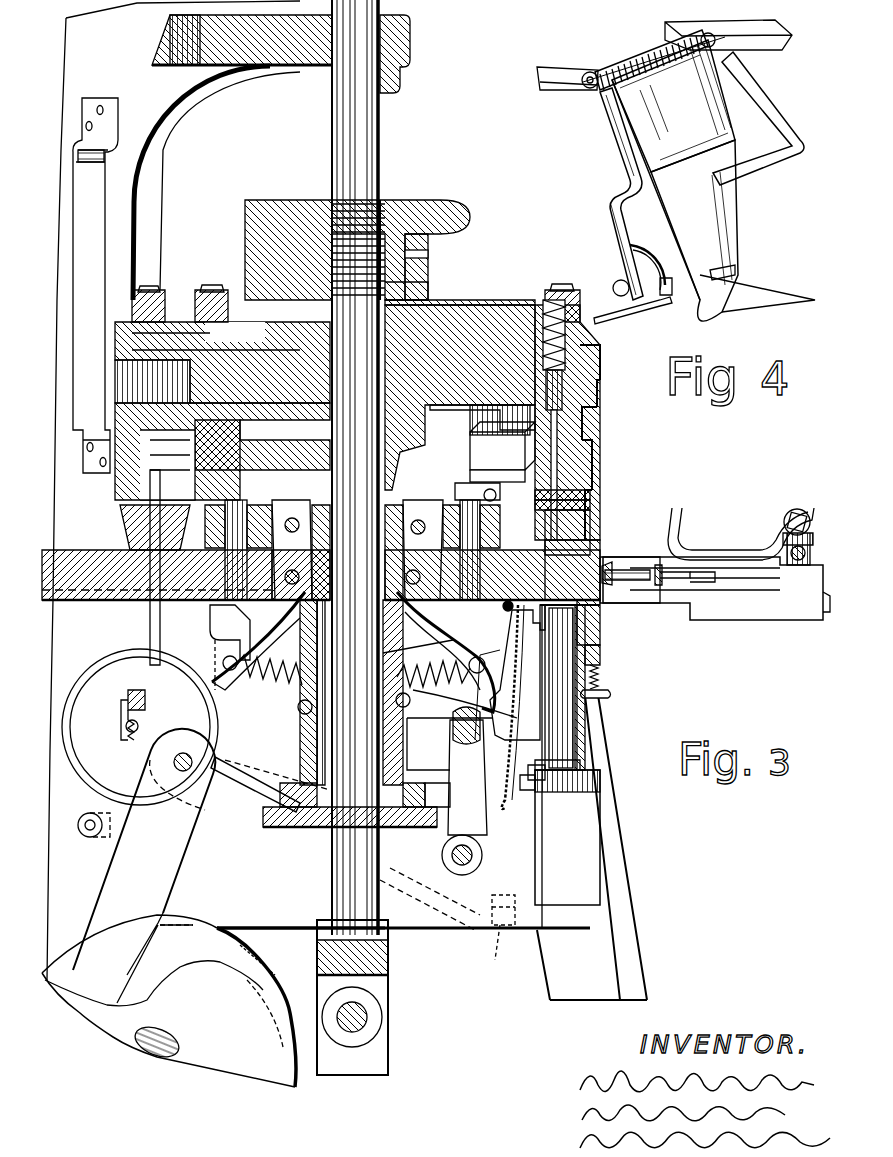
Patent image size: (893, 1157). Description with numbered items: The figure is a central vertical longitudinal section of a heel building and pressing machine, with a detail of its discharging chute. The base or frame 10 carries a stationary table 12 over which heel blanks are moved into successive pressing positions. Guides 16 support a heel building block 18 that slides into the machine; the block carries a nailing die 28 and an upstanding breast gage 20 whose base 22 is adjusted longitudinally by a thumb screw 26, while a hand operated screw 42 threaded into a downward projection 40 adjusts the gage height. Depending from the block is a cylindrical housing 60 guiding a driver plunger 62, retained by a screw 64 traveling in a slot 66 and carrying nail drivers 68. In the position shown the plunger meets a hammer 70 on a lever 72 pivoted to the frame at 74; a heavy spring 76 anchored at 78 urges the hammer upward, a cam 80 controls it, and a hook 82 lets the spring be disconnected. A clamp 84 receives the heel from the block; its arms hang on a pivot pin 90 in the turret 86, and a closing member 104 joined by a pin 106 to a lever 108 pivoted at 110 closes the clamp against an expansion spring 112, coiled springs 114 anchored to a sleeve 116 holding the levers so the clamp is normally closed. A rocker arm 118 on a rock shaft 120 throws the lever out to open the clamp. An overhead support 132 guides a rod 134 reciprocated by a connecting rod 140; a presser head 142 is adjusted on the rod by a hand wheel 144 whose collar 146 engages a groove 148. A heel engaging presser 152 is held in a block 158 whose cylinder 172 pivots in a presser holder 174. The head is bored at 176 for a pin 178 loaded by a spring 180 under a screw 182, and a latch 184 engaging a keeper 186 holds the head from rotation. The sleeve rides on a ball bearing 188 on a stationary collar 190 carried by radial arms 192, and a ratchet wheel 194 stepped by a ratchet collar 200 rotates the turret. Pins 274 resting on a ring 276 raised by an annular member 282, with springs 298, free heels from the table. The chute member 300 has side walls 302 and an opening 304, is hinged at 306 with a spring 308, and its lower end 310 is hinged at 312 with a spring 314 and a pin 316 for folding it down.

In FIG. 3, the base or frame 10 is at (662, 917).
In FIG. 3, the stationary table 12 is at (73, 565).
In FIG. 3, the guides 16 is at (740, 582).
In FIG. 3, the heel building block 18 is at (215, 940).
In FIG. 3, the breast gage 20 is at (580, 540).
In FIG. 3, the breast gage base 22 is at (592, 573).
In FIG. 3, the thumb screw 26 is at (690, 582).
In FIG. 3, the nailing die 28 is at (570, 562).
In FIG. 3, the downward projection 40 is at (602, 615).
In FIG. 3, the hand operated screw 42 is at (602, 650).
In FIG. 3, the cylindrical housing and guide 60 is at (580, 710).
In FIG. 3, the driver plunger 62 is at (578, 740).
In FIG. 3, the screw 64 is at (602, 673).
In FIG. 3, the slot 66 is at (608, 697).
In FIG. 3, the nail drivers 68 is at (617, 612).
In FIG. 3, the hammer 70 is at (567, 837).
In FIG. 3, the hammer lever 72 is at (301, 900).
In FIG. 3, the pivot 74 is at (178, 777).
In FIG. 3, the heavy spring 76 is at (85, 680).
In FIG. 3, the spring anchor 78 is at (205, 622).
In FIG. 3, the cam 80 is at (272, 968).
In FIG. 3, the hook 82 is at (497, 944).
In FIG. 3, the clamp 84 is at (595, 492).
In FIG. 3, the turret 86 is at (264, 520).
In FIG. 3, the pivot pin 90 is at (455, 490).
In FIG. 3, the clamp arm closing member 104 is at (460, 515).
In FIG. 3, the pin 106 is at (357, 550).
In FIG. 3, the lever 108 is at (364, 655).
In FIG. 3, the pivot 110 is at (355, 645).
In FIG. 3, the expansion spring 112 is at (470, 500).
In FIG. 3, the coiled springs 114 is at (292, 700).
In FIG. 3, the sleeve 116 is at (420, 648).
In FIG. 3, the rocker arm 118 is at (440, 782).
In FIG. 3, the rock shaft 120 is at (462, 877).
In FIG. 3, the overhead support and guide 132 is at (412, 28).
In FIG. 3, the rod 134 is at (385, 110).
In FIG. 3, the connecting rod 140 is at (375, 1062).
In FIG. 3, the presser head 142 is at (470, 300).
In FIG. 3, the hand wheel 144 is at (412, 208).
In FIG. 3, the collar 146 is at (430, 268).
In FIG. 3, the groove 148 is at (430, 292).
In FIG. 3, the heel engaging presser 152 is at (590, 497).
In FIG. 3, the block 158 is at (595, 470).
In FIG. 3, the cylinder 172 is at (584, 432).
In FIG. 3, the presser holder 174 is at (594, 447).
In FIG. 3, the bore 176 is at (568, 326).
In FIG. 3, the pin 178 is at (598, 404).
In FIG. 3, the spring 180 is at (583, 348).
In FIG. 3, the screw 182 is at (210, 286).
In FIG. 3, the latch 184 is at (140, 290).
In FIG. 3, the keeper 186 is at (93, 230).
In FIG. 3, the ball bearing 188 is at (290, 765).
In FIG. 3, the stationary collar 190 is at (545, 776).
In FIG. 3, the stationary radial arms 192 is at (537, 765).
In FIG. 3, the ratchet wheel 194 is at (396, 882).
In FIG. 3, the ratchet collar 200 is at (540, 792).
In FIG. 3, the pin 274 is at (155, 595).
In FIG. 3, the ring 276 is at (132, 706).
In FIG. 3, the annular member 282 is at (84, 832).
In FIG. 3, the springs 298 is at (130, 730).
In FIG. 3, the chute member 300 is at (515, 643).
In FIG. 4, the chute member 300 is at (664, 96).
In FIG. 4, the side walls 302 is at (702, 176).
In FIG. 4, the opening 304 is at (693, 200).
In FIG. 3, the hinge 306 is at (506, 612).
In FIG. 4, the hinge 306 is at (588, 86).
In FIG. 4, the spring 308 is at (632, 62).
In FIG. 3, the lower end of chute 310 is at (523, 790).
In FIG. 4, the lower end of chute 310 is at (757, 293).
In FIG. 4, the hinge 312 is at (737, 270).
In FIG. 4, the spring 314 is at (613, 290).
In FIG. 4, the pin 316 is at (644, 310).